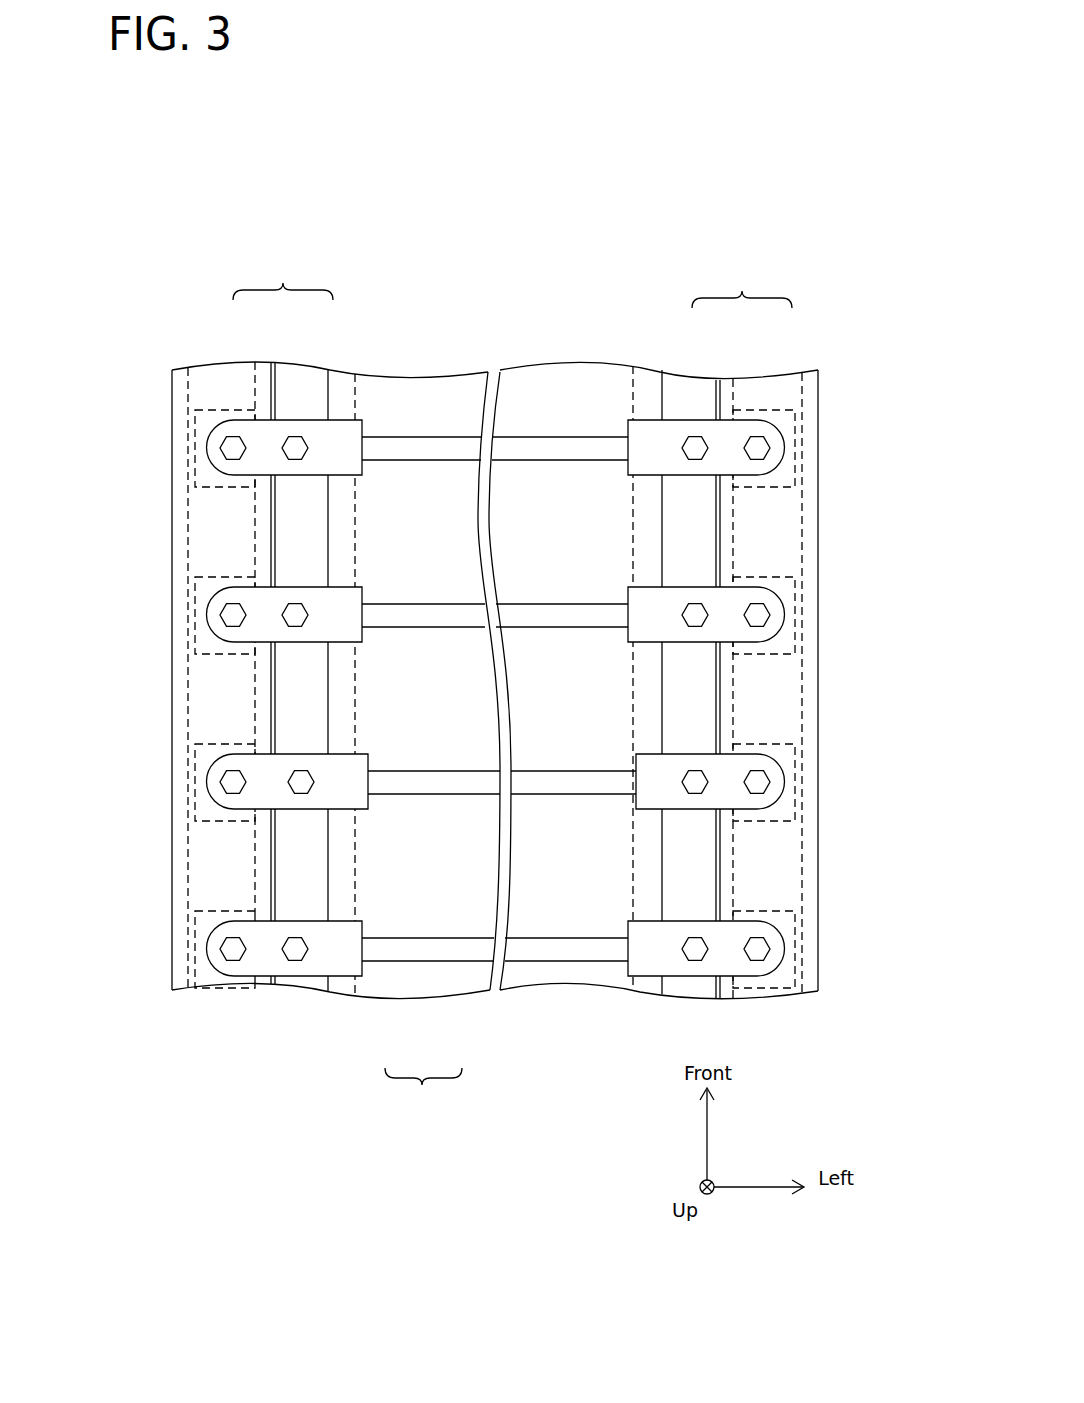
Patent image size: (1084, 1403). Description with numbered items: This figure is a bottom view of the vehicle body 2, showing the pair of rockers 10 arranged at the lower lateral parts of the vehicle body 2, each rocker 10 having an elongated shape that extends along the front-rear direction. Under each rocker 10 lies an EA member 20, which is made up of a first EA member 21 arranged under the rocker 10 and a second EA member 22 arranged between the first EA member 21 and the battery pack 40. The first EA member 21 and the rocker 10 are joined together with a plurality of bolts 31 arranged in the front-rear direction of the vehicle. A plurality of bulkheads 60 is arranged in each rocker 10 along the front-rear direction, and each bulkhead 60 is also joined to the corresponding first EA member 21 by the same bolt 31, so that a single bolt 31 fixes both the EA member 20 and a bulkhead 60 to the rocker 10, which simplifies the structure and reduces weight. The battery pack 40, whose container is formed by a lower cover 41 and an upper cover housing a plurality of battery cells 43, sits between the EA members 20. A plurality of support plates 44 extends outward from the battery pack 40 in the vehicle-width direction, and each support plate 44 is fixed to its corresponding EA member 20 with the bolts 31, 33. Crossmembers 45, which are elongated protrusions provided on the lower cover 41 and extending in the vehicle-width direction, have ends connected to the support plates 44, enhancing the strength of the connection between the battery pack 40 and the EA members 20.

The vehicle body 2 is at (640, 260).
The rocker 10 is at (205, 375).
The EA member 20 is at (512, 285).
The first EA member 21 is at (228, 368).
The second EA member 22 is at (298, 371).
The bolt 31 is at (225, 440).
The bolt 33 is at (288, 458).
The battery pack 40 is at (423, 1091).
The lower cover 41 is at (417, 988).
The battery cell 43 is at (462, 988).
The support plate 44 is at (208, 446).
The crossmember 45 is at (533, 610).
The bulkhead 60 is at (215, 410).